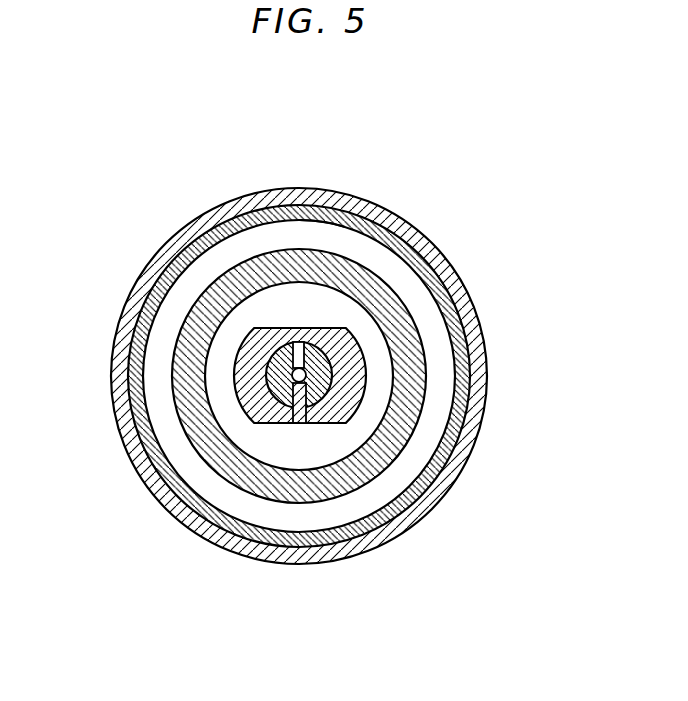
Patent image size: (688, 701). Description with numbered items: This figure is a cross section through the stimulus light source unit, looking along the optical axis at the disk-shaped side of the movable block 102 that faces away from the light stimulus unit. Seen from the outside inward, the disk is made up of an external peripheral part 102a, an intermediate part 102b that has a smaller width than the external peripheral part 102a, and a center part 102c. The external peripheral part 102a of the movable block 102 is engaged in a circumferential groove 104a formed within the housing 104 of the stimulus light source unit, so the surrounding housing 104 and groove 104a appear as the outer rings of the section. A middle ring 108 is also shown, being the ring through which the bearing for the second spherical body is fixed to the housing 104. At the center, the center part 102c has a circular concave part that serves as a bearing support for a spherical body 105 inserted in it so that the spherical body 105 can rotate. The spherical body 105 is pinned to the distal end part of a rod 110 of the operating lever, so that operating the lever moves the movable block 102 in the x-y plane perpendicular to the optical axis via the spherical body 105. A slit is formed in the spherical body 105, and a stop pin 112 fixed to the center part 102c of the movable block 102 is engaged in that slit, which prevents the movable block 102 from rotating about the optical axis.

The movable block 102 is at (304, 386).
The external peripheral part 102a is at (393, 298).
The intermediate part 102b is at (383, 360).
The center part 102c is at (347, 390).
The housing 104 is at (271, 205).
The circumferential groove 104a is at (322, 238).
The spherical body 105 is at (268, 367).
The middle ring 108 is at (225, 203).
The rod 110 is at (258, 424).
The stop pin 112 is at (305, 424).